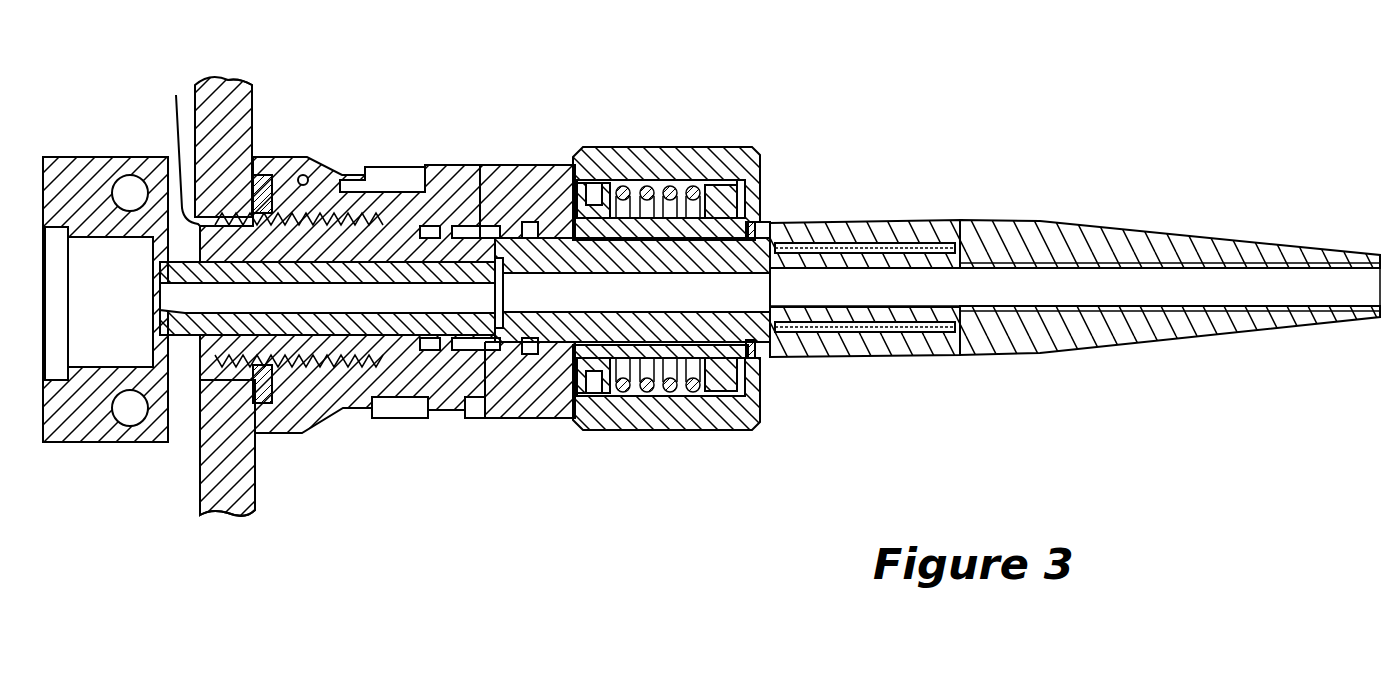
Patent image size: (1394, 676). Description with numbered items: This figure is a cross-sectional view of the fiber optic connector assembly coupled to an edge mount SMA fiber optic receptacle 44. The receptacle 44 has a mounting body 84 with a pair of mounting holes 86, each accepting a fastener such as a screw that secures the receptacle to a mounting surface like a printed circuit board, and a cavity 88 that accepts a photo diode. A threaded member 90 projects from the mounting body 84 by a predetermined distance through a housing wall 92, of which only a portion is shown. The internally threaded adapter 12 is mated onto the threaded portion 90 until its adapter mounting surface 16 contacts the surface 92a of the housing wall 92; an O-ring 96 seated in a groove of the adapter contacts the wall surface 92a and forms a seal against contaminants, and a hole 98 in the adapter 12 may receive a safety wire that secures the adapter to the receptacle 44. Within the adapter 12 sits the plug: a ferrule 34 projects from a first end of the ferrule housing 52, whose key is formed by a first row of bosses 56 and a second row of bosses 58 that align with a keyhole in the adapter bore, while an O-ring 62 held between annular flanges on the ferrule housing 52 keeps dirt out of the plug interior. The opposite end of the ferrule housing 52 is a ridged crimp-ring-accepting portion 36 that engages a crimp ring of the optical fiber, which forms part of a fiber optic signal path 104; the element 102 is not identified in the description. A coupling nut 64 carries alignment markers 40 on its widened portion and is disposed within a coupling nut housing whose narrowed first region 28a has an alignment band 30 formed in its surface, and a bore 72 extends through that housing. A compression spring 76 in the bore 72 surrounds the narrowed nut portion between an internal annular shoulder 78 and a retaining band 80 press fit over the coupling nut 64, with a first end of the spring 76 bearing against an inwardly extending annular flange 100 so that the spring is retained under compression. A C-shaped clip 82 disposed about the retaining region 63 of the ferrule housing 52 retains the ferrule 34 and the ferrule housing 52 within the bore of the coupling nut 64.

The SMA fiber optic receptacle 44 is at (105, 78).
The adapter 12 is at (387, 271).
The adapter mounting surface 16 is at (258, 478).
The first region of coupling nut housing 28a is at (520, 163).
The alignment band 30 is at (472, 424).
The ferrule 34 is at (190, 330).
The crimp-ring-accepting portion 36 is at (945, 243).
The alignment markers 40 is at (440, 186).
The ferrule housing 52 is at (725, 320).
The first row of bosses 56 is at (428, 226).
The second row of bosses 58 is at (470, 226).
The O-ring 62 is at (532, 222).
The retaining region 63 is at (768, 215).
The coupling nut 64 is at (568, 398).
The bore 72 is at (687, 284).
The compression spring 76 is at (690, 185).
The internal annular shoulder 78 is at (622, 186).
The retaining band 80 is at (726, 192).
The C-shaped clip 82 is at (760, 220).
The mounting body 84 is at (105, 296).
The mounting holes 86 is at (129, 190).
The cavity 88 is at (99, 303).
The threaded member 90 is at (177, 140).
The housing wall 92 is at (225, 95).
The housing wall surface 92a is at (253, 100).
The O-ring 96 is at (273, 175).
The hole 98 is at (309, 178).
The inwardly extending annular flange 100 is at (600, 183).
The strip 102 is at (850, 243).
The fiber optic signal path 104 is at (910, 221).